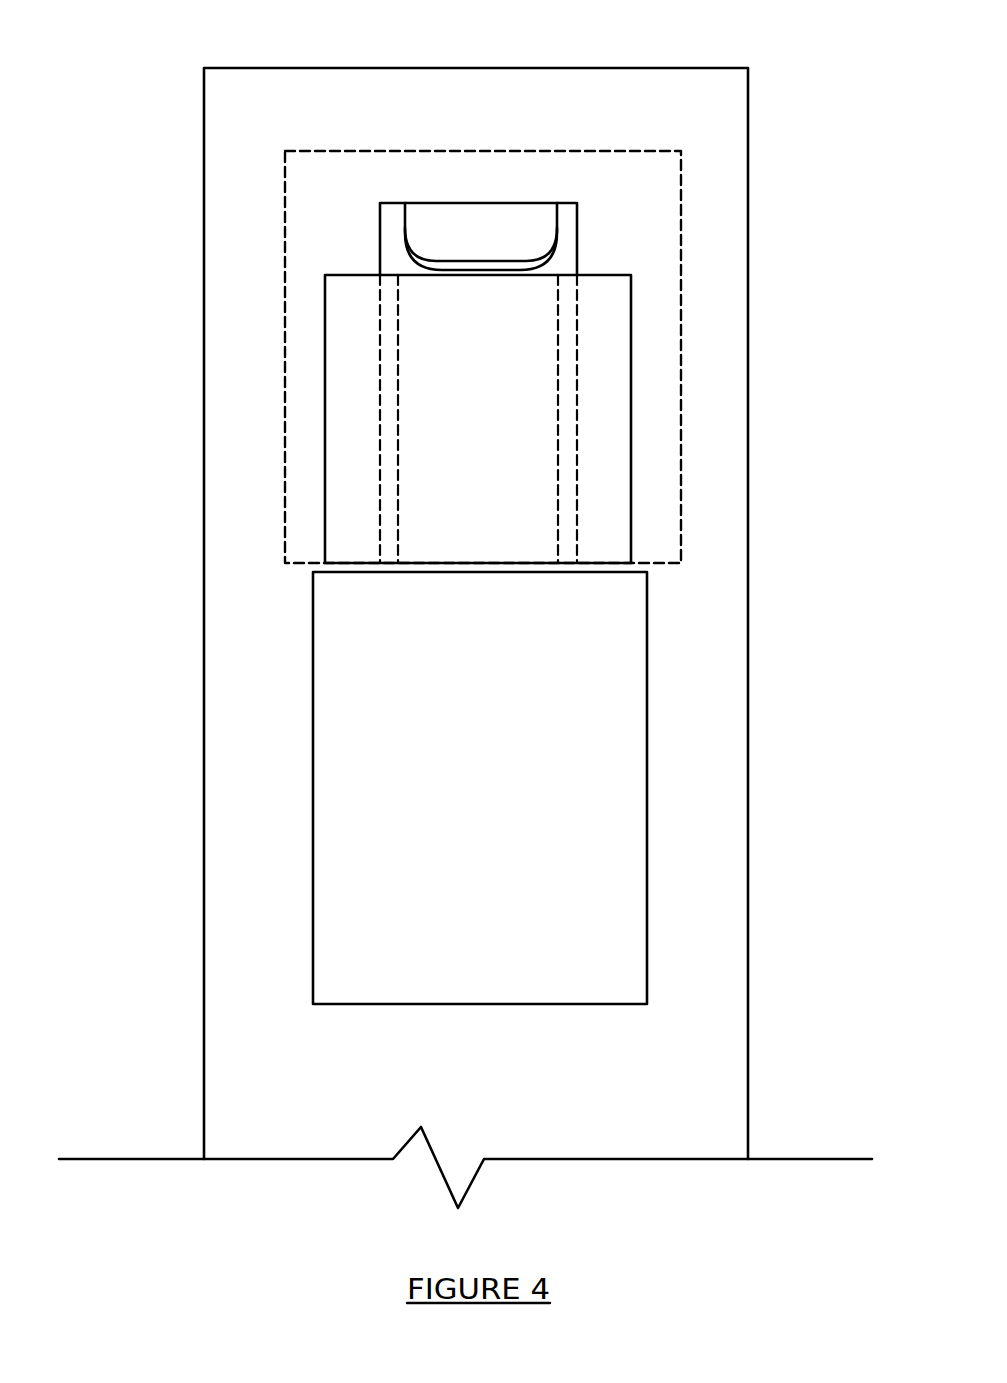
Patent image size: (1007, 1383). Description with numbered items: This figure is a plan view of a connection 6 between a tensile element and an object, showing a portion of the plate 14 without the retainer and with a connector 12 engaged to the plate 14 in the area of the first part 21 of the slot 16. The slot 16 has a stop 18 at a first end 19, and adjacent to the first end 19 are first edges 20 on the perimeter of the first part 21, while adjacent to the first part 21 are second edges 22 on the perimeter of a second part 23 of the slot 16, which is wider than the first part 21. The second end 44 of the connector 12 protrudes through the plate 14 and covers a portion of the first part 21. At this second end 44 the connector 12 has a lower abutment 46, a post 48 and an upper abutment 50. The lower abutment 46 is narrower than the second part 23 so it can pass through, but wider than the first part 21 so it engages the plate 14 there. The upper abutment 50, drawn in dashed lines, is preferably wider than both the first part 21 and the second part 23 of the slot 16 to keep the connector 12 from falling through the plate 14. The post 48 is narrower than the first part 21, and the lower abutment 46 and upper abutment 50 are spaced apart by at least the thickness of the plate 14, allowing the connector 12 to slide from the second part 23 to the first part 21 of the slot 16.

The connection 6 is at (479, 504).
The connector 12 is at (581, 383).
The plate 14 is at (717, 868).
The slot 16 is at (575, 788).
The stop 18 is at (618, 176).
The first end 19 is at (618, 176).
The first edges 20 is at (561, 260).
The first part 21 is at (578, 233).
The second edges 22 is at (575, 788).
The second part 23 is at (605, 782).
The second end 44 is at (613, 530).
The lower abutment 46 is at (631, 466).
The post 48 is at (484, 382).
The upper abutment 50 is at (645, 187).